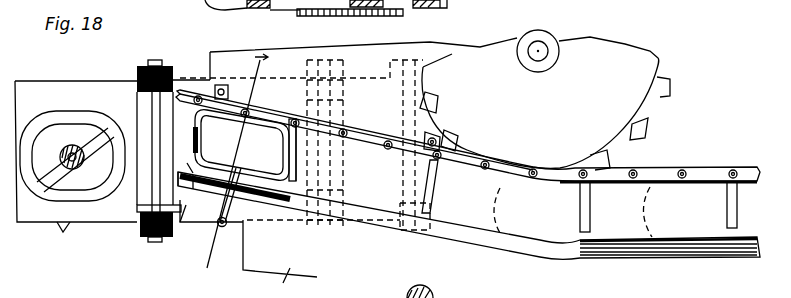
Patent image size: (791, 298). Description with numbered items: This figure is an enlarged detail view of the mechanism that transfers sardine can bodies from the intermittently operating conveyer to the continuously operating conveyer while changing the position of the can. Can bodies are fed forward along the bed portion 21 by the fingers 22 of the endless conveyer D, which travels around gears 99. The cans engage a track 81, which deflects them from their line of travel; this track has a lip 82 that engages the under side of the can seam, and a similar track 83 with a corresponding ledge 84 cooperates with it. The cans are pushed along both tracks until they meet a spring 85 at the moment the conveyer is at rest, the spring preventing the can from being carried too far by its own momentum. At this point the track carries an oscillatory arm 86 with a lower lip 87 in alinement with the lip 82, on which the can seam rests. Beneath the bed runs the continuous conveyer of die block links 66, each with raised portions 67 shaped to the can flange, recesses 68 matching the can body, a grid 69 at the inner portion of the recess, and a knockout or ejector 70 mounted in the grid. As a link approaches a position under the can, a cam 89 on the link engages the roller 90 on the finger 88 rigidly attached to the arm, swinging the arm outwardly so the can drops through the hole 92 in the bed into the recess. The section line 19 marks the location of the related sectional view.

The section line 19 is at (238, 158).
The bed portion 21 is at (447, 50).
The fingers or flights 22 is at (737, 192).
The die block links 66 is at (410, 10).
The raised portions 67 is at (47, 112).
The recesses 68 is at (159, 121).
The grid 69 is at (66, 170).
The knockout or ejector 70 is at (80, 143).
The track 81 is at (455, 237).
The lip 82 is at (450, 228).
The track 83 is at (363, 138).
The ledge 84 is at (452, 168).
The spring 85 is at (198, 130).
The oscillatory arm 86 is at (250, 203).
The lower lip 87 is at (212, 180).
The finger 88 is at (217, 225).
The cam 89 is at (63, 232).
The roller 90 is at (217, 260).
The hole 92 is at (293, 178).
The gears 99 is at (658, 55).